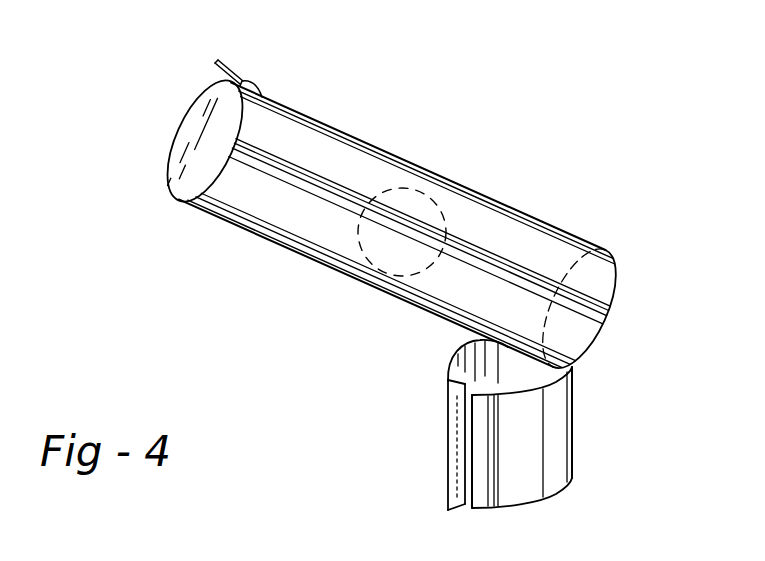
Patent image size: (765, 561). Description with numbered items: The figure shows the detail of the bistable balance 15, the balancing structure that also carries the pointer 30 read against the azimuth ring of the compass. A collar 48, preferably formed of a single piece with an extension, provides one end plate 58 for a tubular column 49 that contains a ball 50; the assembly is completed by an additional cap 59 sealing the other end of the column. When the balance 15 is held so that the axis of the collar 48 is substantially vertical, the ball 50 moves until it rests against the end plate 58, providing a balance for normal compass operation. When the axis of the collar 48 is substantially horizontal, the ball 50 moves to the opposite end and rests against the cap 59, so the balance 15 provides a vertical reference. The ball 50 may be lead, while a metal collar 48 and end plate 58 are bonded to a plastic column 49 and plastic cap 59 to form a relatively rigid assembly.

The bistable balance 15 is at (513, 134).
The pointer 30 is at (240, 83).
The collar 48 is at (552, 430).
The tubular column 49 is at (521, 233).
The ball 50 is at (415, 210).
The end plate 58 is at (582, 317).
The cap 59 is at (187, 141).